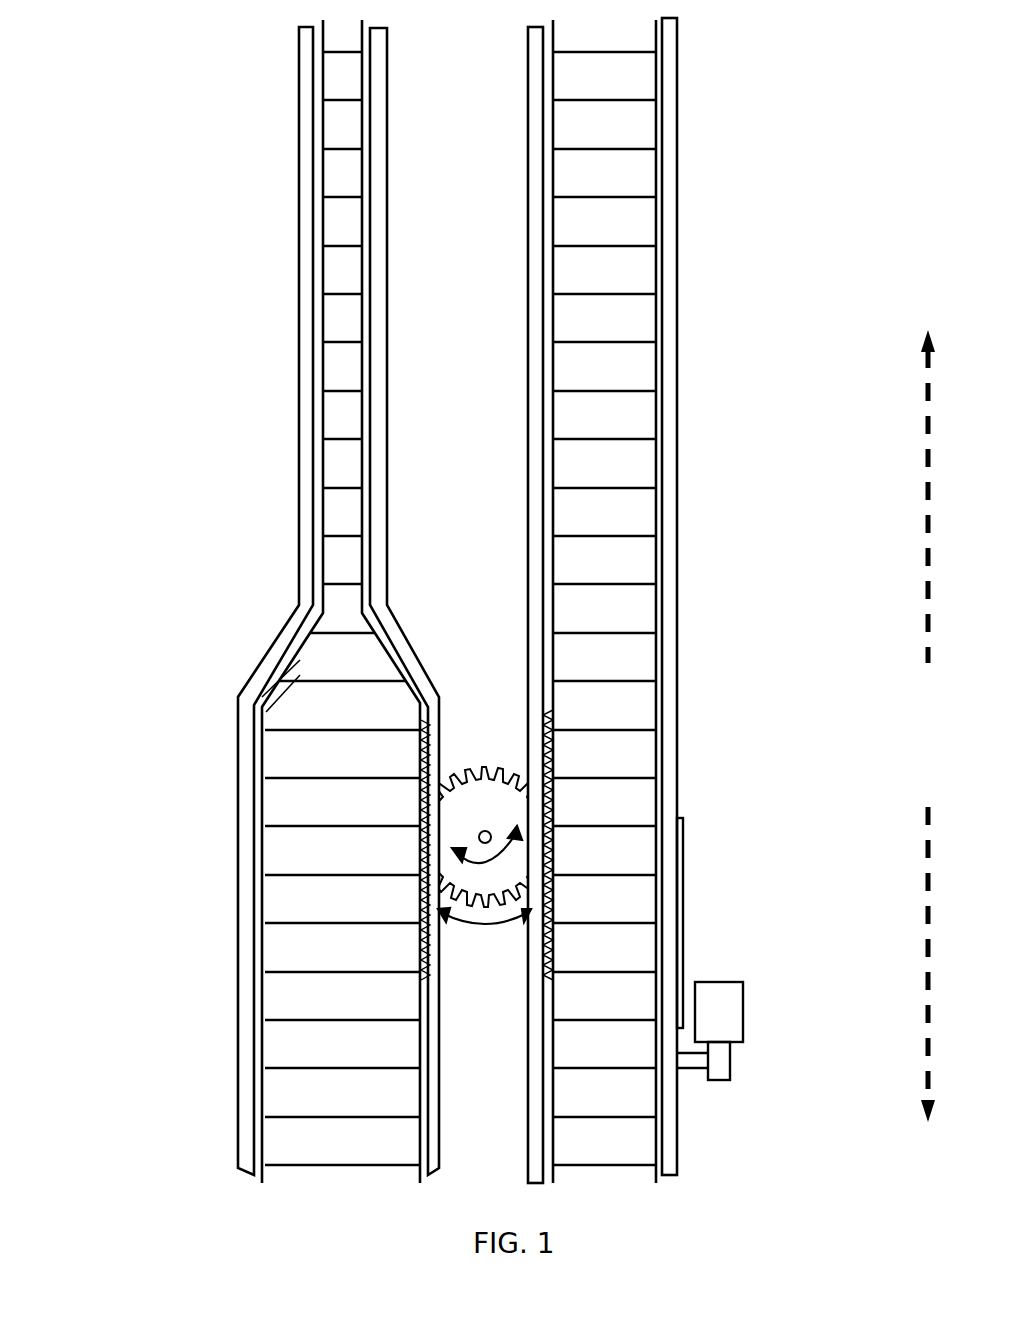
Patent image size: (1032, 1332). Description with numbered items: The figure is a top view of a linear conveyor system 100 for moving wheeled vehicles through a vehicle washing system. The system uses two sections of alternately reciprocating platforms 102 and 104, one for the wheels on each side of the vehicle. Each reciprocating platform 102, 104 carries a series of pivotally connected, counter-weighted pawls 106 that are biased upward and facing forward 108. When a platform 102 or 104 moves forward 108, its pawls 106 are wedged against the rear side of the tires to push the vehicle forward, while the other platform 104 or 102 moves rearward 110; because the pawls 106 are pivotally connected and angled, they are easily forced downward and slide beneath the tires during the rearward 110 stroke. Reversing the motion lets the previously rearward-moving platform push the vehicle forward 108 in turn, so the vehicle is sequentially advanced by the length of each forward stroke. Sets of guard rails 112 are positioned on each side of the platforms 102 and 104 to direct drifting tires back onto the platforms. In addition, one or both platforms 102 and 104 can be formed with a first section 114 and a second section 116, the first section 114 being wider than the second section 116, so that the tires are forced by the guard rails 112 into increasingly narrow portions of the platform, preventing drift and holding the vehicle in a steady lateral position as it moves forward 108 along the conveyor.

The linear conveyor system 100 is at (141, 36).
The reciprocating platform 102 is at (172, 619).
The reciprocating platform 104 is at (585, 617).
The pawls 106 is at (286, 850).
The forward direction 108 is at (918, 415).
The rearward direction 110 is at (928, 1065).
The guard rails 112 is at (306, 502).
The first section 114 is at (223, 894).
The second section 116 is at (224, 601).